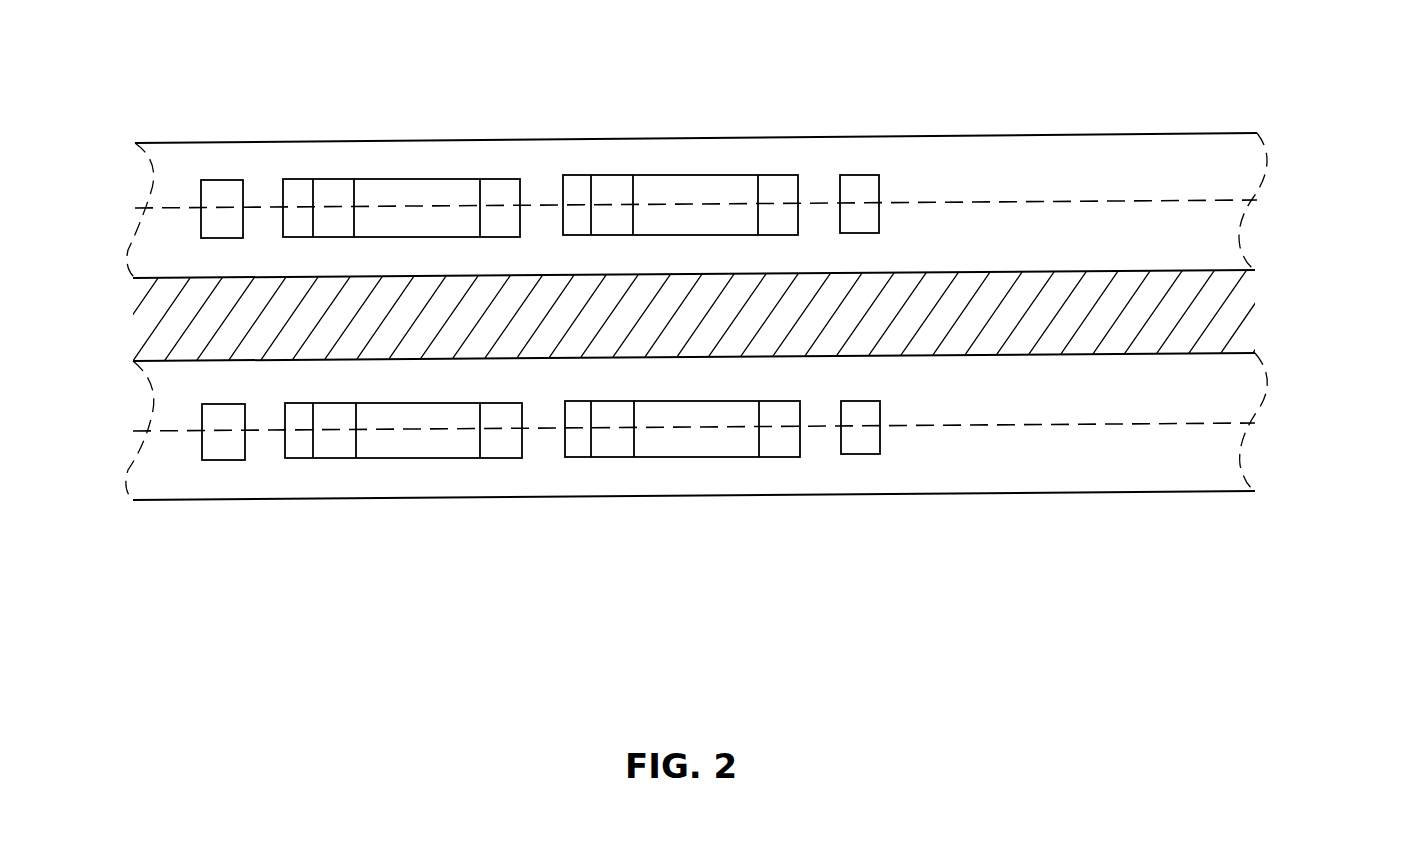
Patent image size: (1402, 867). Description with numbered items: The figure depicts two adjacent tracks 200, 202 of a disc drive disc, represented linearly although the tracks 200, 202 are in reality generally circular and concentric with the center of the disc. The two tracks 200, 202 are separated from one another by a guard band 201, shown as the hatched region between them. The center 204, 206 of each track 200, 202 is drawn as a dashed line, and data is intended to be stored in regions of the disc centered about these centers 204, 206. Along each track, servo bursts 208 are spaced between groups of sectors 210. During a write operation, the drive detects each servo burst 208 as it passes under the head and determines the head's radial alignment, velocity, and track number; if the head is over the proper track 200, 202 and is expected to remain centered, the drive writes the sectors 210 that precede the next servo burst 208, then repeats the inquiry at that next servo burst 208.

The track 200 is at (1282, 133).
The guard band 201 is at (1282, 270).
The track 202 is at (1282, 353).
The center of track 204 is at (1168, 195).
The center of track 206 is at (1146, 427).
The servo burst 208 is at (210, 190).
The sectors 210 is at (520, 167).